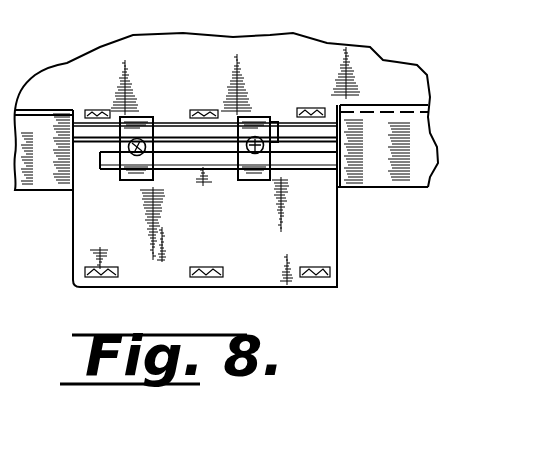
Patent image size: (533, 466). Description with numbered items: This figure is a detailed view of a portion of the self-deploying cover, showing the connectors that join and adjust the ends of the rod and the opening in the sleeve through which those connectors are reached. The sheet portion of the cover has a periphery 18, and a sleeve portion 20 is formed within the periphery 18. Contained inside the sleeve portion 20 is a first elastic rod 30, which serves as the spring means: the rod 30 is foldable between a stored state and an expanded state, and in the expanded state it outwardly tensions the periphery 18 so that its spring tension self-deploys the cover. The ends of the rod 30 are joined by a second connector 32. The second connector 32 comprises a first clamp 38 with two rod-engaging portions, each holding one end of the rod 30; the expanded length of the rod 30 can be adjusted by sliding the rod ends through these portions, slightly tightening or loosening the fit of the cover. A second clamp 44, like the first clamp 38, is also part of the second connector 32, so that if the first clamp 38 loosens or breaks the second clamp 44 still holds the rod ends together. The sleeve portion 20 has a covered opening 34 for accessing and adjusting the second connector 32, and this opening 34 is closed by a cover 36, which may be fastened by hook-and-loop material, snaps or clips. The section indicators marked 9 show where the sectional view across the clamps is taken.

The section line 9- 9 is at (136, 72).
The periphery 18 is at (405, 137).
The sleeve portion 20 is at (424, 141).
The first elastic rod 30 is at (305, 157).
The second connector 32 is at (262, 167).
The covered opening 34 is at (325, 128).
The cover 36 is at (340, 240).
The first clamp 38 is at (227, 176).
The second clamp 44 is at (140, 125).